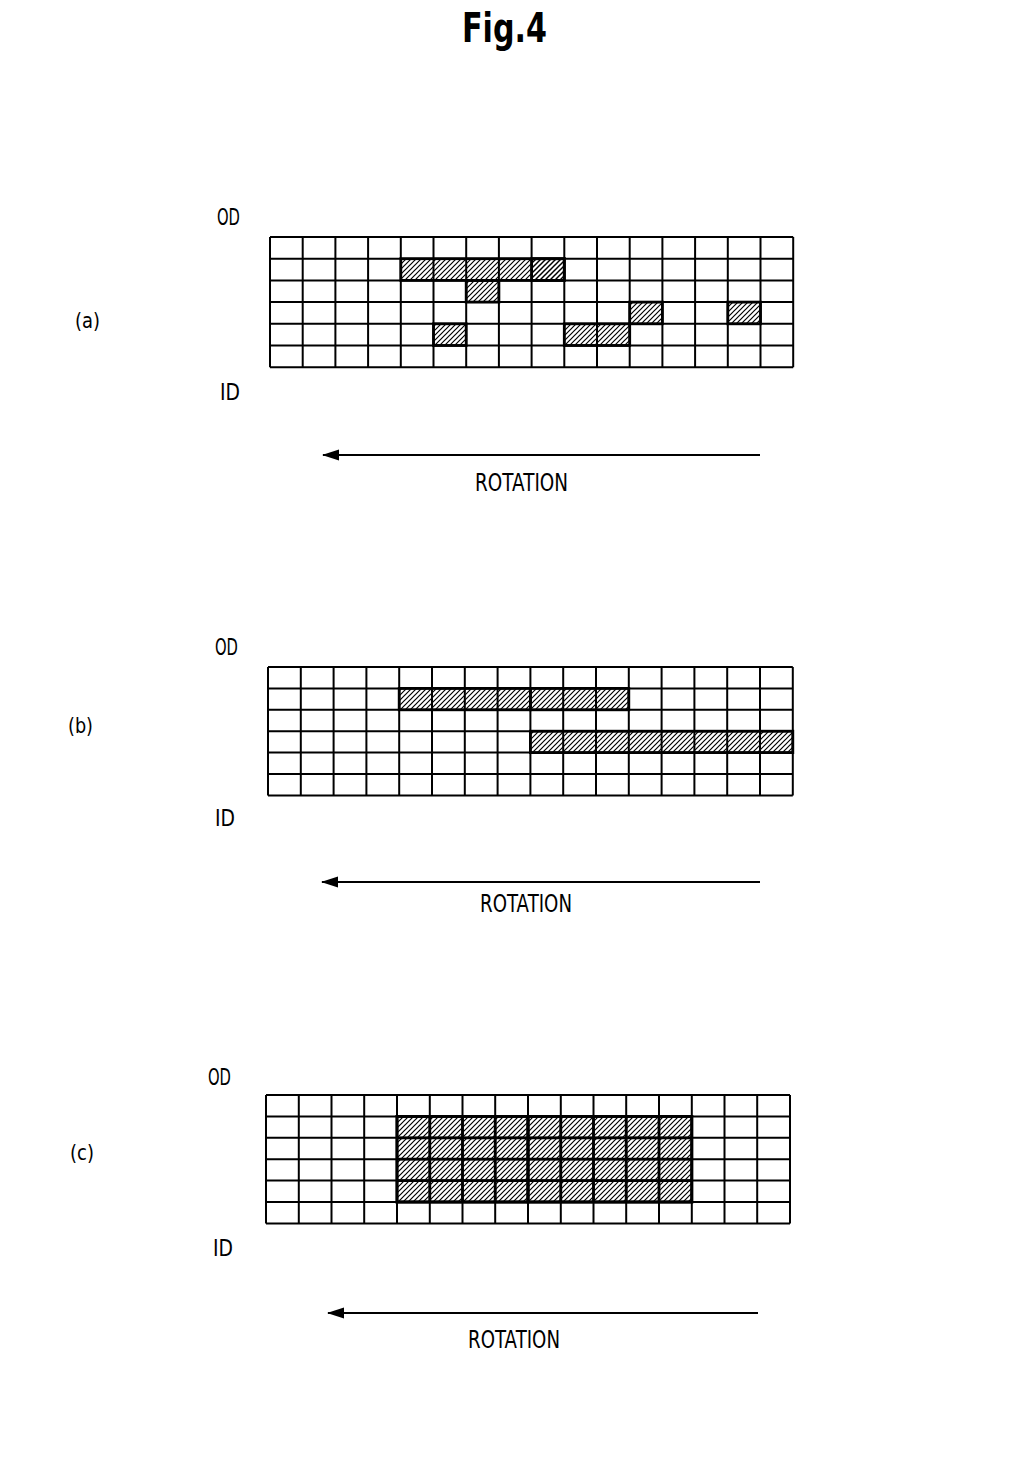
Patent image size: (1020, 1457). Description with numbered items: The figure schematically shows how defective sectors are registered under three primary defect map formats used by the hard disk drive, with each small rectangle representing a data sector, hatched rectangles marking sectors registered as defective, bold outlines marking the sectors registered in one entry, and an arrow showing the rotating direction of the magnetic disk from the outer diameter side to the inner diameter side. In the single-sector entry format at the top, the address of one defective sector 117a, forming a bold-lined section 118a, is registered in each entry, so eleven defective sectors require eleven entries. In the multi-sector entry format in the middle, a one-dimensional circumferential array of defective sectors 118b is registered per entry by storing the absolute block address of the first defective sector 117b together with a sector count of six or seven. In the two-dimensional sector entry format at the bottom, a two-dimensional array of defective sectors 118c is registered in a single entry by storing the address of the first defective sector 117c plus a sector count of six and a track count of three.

The defective sector 117a is at (450, 258).
The defective sector registered in one entry 118a is at (553, 258).
The first defective sector 117b is at (417, 688).
The one-dimensional array of defective sectors 118b is at (548, 688).
The first defective sector 117c is at (413, 1117).
The two-dimensional array of defective sectors 118c is at (577, 1117).